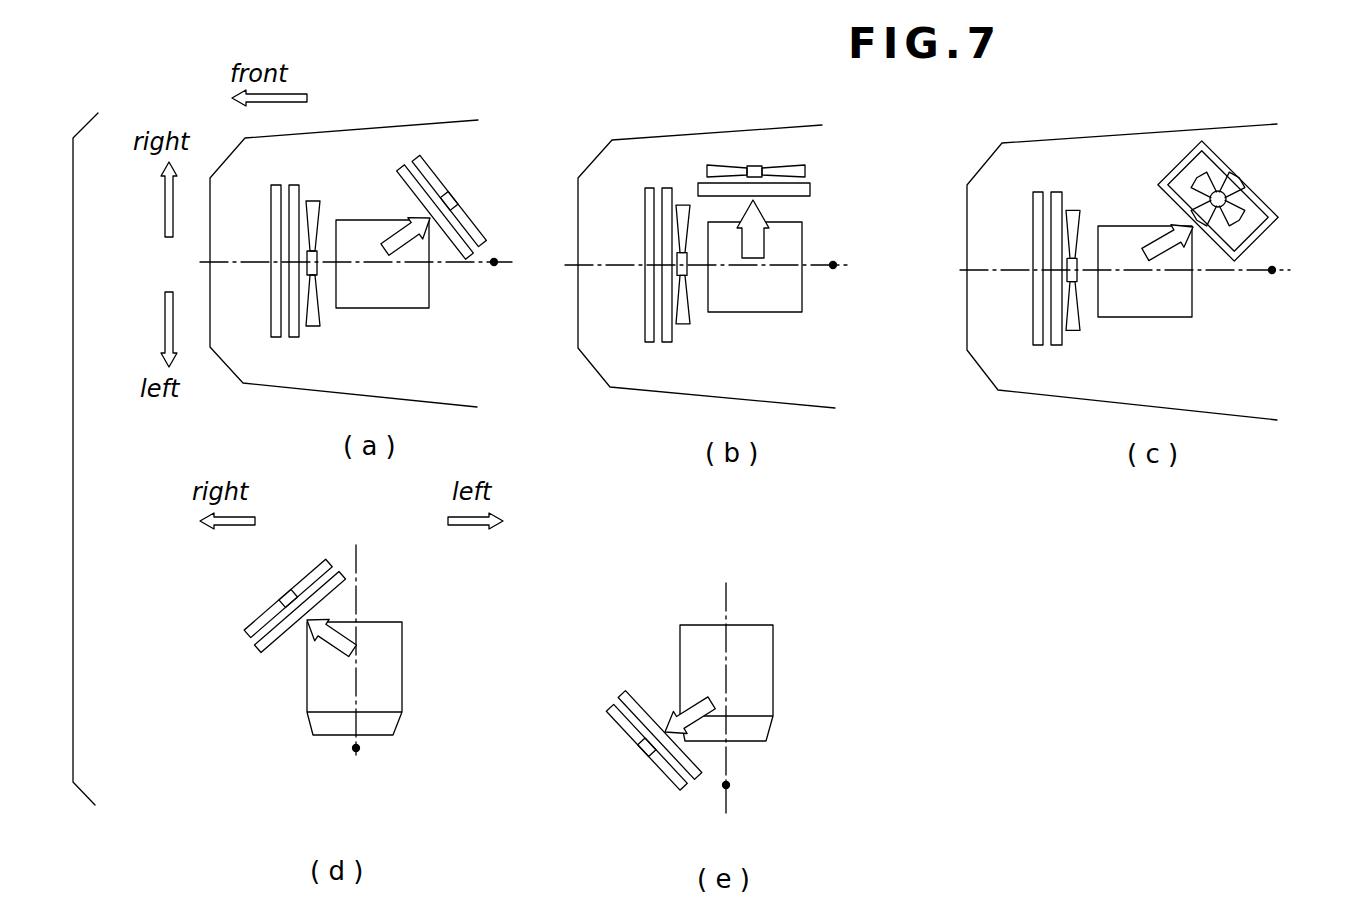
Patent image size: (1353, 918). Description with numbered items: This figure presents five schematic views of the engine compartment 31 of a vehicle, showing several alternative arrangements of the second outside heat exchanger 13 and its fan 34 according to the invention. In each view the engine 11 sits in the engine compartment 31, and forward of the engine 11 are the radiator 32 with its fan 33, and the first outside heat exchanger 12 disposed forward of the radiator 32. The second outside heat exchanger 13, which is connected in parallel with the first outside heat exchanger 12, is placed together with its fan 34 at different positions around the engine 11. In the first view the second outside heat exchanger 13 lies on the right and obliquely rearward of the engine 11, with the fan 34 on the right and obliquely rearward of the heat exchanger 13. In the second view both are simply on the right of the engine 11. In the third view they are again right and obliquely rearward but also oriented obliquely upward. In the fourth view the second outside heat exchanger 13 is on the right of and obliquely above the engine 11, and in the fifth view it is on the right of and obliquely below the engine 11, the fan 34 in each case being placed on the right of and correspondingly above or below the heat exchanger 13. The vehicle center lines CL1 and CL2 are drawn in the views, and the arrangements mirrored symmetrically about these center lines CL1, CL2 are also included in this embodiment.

The engine 11 is at (375, 310).
The first outside heat exchanger 12 is at (647, 187).
The second outside heat exchanger 13 is at (400, 168).
The engine compartment 31 is at (612, 194).
The radiator 32 is at (667, 187).
The fan 33 is at (683, 328).
The fan 34 is at (437, 170).
The vehicle center line CL1 is at (494, 265).
The vehicle center line CL2 is at (359, 749).